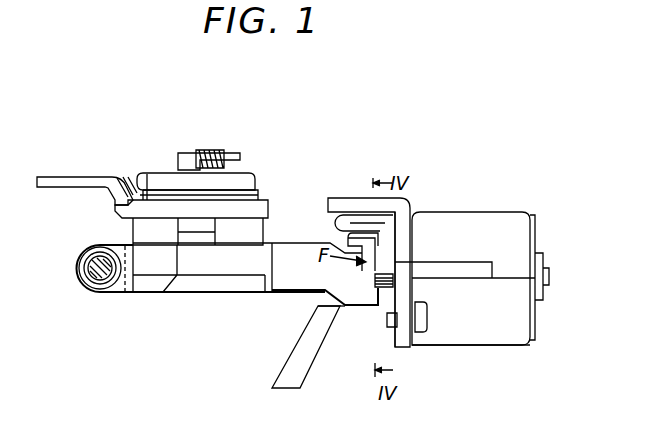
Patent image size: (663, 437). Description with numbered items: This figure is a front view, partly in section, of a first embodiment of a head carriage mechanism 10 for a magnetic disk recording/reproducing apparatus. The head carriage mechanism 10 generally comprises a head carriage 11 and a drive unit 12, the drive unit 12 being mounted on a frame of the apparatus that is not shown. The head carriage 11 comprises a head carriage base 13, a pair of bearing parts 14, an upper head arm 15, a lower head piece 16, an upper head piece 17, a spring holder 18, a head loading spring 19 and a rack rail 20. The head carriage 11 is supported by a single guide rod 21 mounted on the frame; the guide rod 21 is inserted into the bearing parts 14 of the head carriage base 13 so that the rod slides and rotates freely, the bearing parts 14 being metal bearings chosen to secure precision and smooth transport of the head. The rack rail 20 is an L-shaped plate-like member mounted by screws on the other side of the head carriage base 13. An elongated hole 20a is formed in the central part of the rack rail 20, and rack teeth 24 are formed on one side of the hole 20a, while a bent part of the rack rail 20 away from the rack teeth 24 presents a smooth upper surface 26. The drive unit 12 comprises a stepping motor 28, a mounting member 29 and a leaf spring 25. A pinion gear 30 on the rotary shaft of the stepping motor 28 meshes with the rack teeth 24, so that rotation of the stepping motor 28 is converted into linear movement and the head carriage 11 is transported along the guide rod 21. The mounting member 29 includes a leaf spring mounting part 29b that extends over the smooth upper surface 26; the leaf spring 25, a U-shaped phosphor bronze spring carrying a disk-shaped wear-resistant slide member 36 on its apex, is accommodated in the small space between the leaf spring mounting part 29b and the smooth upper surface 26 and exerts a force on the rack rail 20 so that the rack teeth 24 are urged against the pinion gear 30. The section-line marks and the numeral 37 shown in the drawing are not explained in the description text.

The head carriage mechanism 10 is at (470, 87).
The head carriage 11 is at (150, 166).
The drive unit 12 is at (417, 362).
The head carriage base 13 is at (288, 258).
The bearing parts 14 is at (96, 294).
The upper head arm 15 is at (258, 205).
The lower head piece 16 is at (198, 245).
The upper head piece 17 is at (233, 246).
The spring holder 18 is at (235, 151).
The head loading spring 19 is at (203, 150).
The rack rail 20 is at (372, 263).
The elongated hole 20a is at (368, 284).
The guide rod 21 is at (88, 262).
The rack teeth 24 is at (395, 270).
The leaf spring 25 is at (333, 240).
The smooth upper surface 26 is at (330, 243).
The stepping motor 28 is at (508, 223).
The mounting member 29 is at (407, 200).
The leaf spring mounting part 29b is at (362, 199).
The pinion gear 30 is at (392, 290).
The slide member 36 is at (355, 252).
The support plate 37 is at (410, 208).